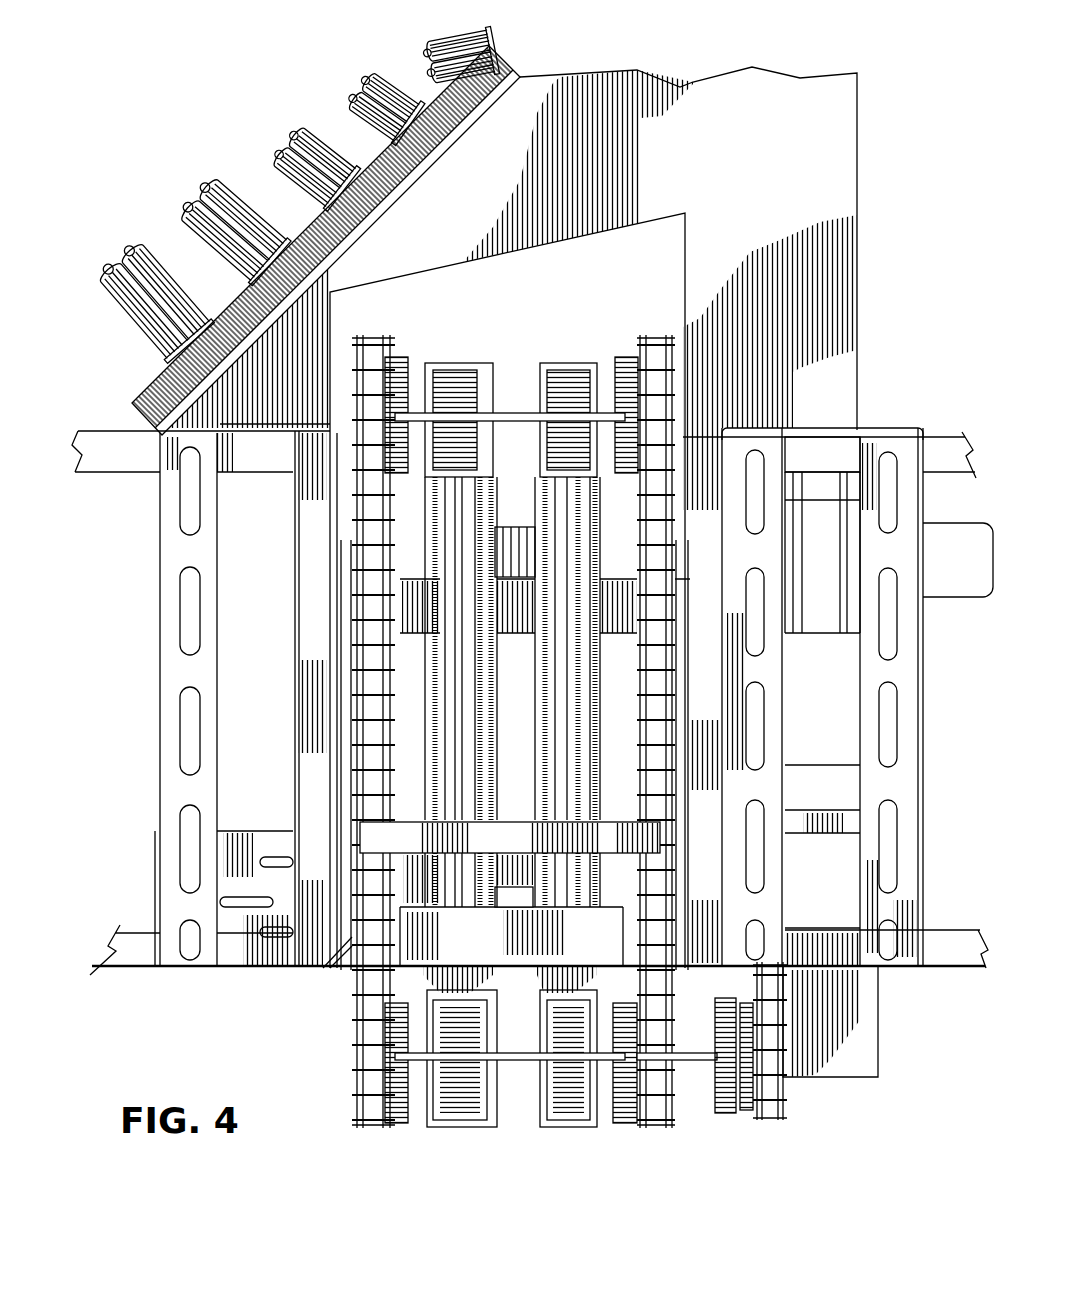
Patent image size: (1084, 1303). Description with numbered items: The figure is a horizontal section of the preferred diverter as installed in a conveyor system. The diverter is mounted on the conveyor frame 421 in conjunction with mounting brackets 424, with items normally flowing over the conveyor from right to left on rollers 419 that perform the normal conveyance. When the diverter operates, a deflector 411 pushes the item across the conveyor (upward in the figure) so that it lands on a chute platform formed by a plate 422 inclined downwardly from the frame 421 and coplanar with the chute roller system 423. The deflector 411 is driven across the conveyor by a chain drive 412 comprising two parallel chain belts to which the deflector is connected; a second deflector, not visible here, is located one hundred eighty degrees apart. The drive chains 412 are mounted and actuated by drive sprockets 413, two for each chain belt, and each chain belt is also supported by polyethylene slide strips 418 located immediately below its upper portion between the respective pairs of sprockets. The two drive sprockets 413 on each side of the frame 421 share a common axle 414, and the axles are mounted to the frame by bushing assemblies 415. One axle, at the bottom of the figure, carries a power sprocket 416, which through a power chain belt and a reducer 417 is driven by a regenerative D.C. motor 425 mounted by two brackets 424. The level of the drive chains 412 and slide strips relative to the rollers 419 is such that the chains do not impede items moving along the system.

The deflector 411 is at (663, 843).
The chain drive 412 is at (358, 615).
The drive sprockets 413 is at (373, 347).
The common axle 414 is at (418, 412).
The bushing assemblies 415 is at (460, 363).
The power sprocket 416 is at (768, 1067).
The reducer 417 is at (777, 983).
The polyethylene slide strips 418 is at (353, 937).
The rollers 419 is at (517, 540).
The conveyor frame 421 is at (125, 952).
The plate 422 is at (827, 237).
The chute roller system 423 is at (440, 53).
The mounting brackets 424 is at (207, 757).
The regenerative D.C. motor 425 is at (812, 428).